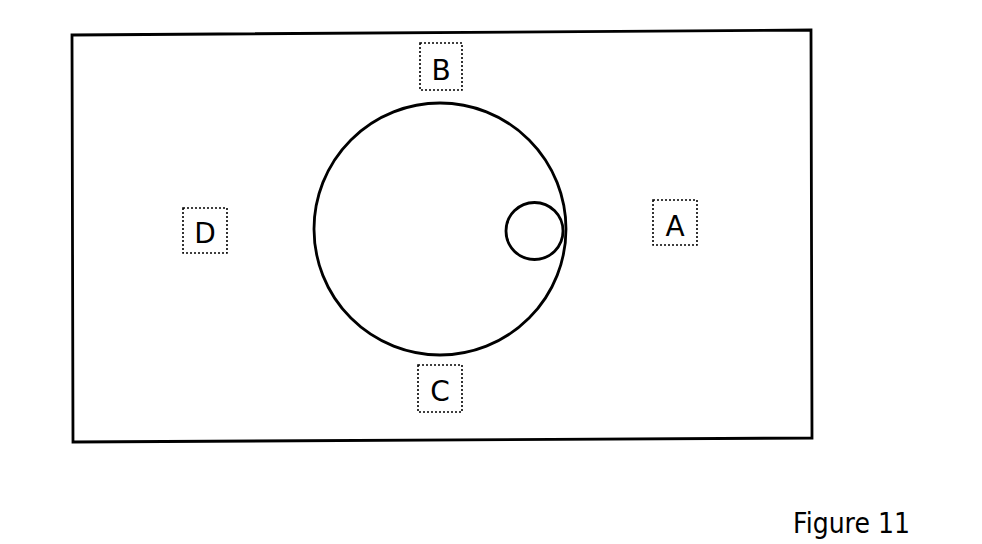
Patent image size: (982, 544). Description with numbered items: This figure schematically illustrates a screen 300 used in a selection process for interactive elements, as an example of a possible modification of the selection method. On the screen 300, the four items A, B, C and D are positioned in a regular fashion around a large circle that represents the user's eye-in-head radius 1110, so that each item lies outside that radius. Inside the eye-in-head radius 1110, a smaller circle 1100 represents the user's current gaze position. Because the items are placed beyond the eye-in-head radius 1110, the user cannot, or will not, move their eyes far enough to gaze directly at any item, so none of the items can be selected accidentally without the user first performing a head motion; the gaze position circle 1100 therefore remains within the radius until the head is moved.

The screen 300 is at (53, 517).
The eye-in-head radius 1110 is at (348, 141).
The circle representing the user's gaze position 1100 is at (537, 200).